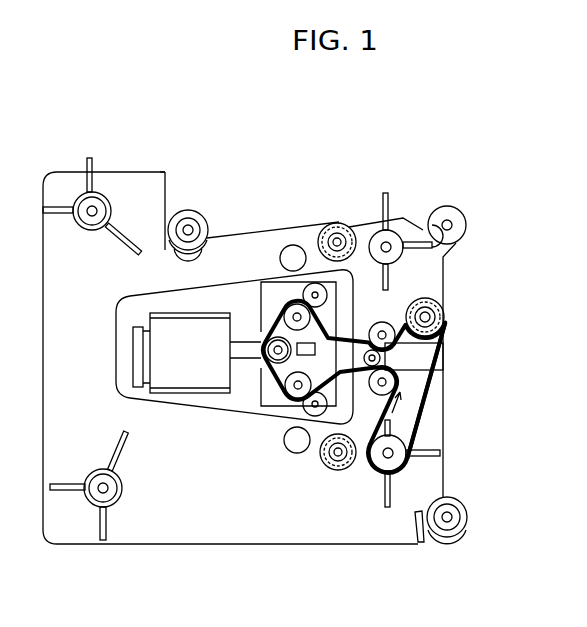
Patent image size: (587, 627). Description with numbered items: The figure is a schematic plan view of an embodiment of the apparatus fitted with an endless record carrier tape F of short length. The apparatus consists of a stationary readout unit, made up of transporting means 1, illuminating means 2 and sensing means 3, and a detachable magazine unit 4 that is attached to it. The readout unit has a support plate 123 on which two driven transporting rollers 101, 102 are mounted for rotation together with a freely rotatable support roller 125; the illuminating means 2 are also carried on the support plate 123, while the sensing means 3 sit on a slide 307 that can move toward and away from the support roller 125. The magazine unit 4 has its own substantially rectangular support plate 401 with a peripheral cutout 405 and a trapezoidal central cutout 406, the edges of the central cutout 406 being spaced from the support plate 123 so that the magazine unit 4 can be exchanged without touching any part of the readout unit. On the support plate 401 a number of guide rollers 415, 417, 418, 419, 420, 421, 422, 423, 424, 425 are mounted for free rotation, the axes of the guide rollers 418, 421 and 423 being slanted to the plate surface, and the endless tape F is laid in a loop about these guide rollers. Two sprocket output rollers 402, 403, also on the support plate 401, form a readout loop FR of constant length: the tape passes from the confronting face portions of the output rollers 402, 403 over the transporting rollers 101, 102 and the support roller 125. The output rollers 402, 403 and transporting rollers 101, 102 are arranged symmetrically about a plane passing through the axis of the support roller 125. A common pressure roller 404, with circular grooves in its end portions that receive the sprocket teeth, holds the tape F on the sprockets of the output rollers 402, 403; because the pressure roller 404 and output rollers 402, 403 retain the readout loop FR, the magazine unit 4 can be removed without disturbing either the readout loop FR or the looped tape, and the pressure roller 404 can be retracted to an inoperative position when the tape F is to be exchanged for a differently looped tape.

The transporting means 1 is at (282, 400).
The illuminating means 2 is at (302, 352).
The sensing means 3 is at (178, 362).
The magazine unit 4 is at (290, 539).
The transporting roller 101 is at (286, 306).
The transporting roller 102 is at (292, 408).
The support plate 123 is at (263, 398).
The support roller 125 is at (270, 365).
The slide 307 is at (197, 313).
The support plate 401 is at (190, 531).
The output roller 402 is at (378, 326).
The output roller 403 is at (378, 392).
The pressure roller 404 is at (380, 360).
The peripheral cutout 405 is at (167, 198).
The central cutout 406 is at (180, 411).
The guide roller 415 is at (97, 502).
The guide roller 417 is at (97, 198).
The guide roller 418 is at (208, 228).
The guide roller 419 is at (337, 223).
The guide roller 420 is at (390, 243).
The guide roller 421 is at (463, 218).
The guide roller 422 is at (410, 450).
The guide roller 423 is at (467, 518).
The guide roller 424 is at (348, 470).
The guide roller 425 is at (440, 303).
The endless record carrier tape F is at (425, 398).
The readout loop FR is at (354, 368).